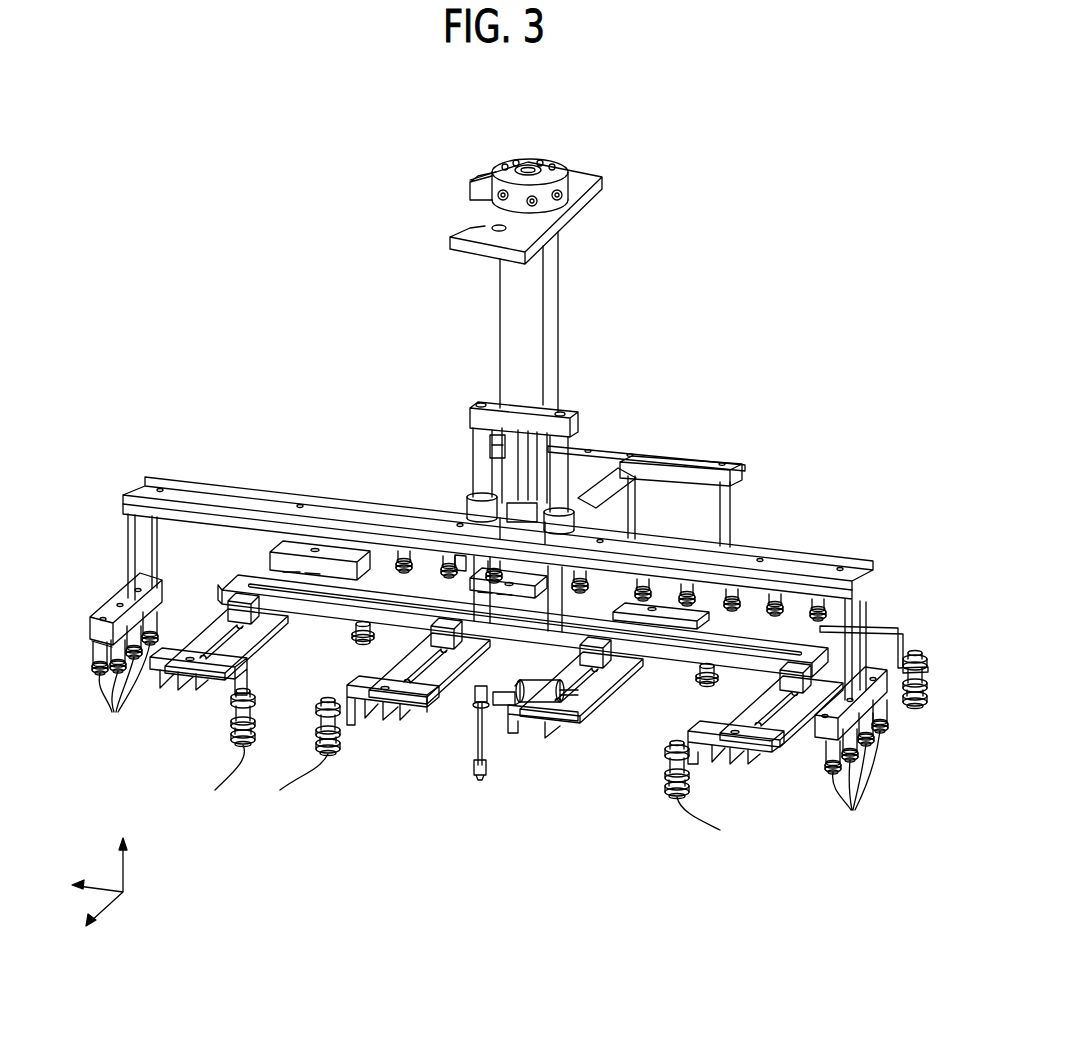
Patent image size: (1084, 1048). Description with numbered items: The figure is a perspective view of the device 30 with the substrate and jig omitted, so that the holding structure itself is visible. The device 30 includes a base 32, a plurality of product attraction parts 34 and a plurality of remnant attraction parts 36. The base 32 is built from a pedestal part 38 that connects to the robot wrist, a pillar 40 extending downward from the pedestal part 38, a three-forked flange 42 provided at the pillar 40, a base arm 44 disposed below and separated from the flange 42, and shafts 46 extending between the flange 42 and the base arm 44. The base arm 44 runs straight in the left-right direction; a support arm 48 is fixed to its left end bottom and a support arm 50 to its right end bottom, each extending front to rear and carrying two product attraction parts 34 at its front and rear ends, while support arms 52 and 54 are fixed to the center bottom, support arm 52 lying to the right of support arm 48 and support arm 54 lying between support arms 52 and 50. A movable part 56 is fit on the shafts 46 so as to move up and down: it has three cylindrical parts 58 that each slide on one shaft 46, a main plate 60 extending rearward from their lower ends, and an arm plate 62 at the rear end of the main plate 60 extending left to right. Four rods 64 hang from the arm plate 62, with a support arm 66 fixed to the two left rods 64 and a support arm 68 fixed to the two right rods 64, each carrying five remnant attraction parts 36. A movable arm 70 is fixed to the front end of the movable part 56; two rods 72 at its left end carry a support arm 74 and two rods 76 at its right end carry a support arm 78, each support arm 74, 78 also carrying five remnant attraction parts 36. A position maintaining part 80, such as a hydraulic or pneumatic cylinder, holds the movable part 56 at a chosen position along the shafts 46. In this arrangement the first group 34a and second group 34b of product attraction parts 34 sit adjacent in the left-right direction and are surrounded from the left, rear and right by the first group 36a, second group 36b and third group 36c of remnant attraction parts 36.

The device 30 is at (851, 114).
The base 32 is at (590, 318).
The product attraction part 34 is at (372, 632).
The first group of product attraction parts 34a is at (212, 750).
The second group of product attraction parts 34b is at (650, 803).
The remnant attraction part 36 is at (447, 555).
The first group of remnant attraction parts 36a is at (168, 603).
The second group of remnant attraction parts 36b is at (368, 548).
The third group of remnant attraction parts 36c is at (892, 748).
The pedestal part 38 is at (560, 163).
The pillar 40 is at (506, 303).
The three-forked flange 42 is at (483, 402).
The base arm 44 is at (245, 574).
The shaft 46 is at (482, 450).
The support arm 48 is at (242, 630).
The support arm 50 is at (755, 760).
The support arm 52 is at (440, 682).
The support arm 54 is at (597, 692).
The movable part 56 is at (608, 436).
The cylindrical part 58 is at (470, 506).
The main plate 60 is at (600, 494).
The arm plate 62 is at (693, 460).
The rod 64 is at (712, 537).
The support arm 66 is at (460, 498).
The support arm 68 is at (737, 553).
The movable arm 70 is at (290, 490).
The rod 72 is at (150, 540).
The support arm 74 is at (102, 616).
The rod 76 is at (850, 645).
The support arm 78 is at (818, 727).
The position maintaining part 80 is at (513, 440).